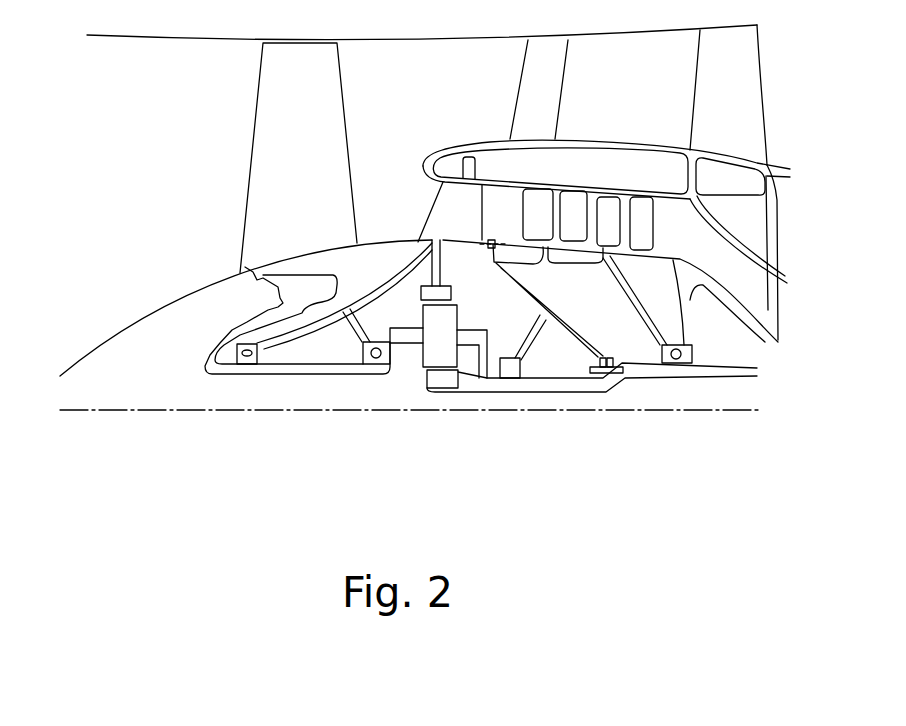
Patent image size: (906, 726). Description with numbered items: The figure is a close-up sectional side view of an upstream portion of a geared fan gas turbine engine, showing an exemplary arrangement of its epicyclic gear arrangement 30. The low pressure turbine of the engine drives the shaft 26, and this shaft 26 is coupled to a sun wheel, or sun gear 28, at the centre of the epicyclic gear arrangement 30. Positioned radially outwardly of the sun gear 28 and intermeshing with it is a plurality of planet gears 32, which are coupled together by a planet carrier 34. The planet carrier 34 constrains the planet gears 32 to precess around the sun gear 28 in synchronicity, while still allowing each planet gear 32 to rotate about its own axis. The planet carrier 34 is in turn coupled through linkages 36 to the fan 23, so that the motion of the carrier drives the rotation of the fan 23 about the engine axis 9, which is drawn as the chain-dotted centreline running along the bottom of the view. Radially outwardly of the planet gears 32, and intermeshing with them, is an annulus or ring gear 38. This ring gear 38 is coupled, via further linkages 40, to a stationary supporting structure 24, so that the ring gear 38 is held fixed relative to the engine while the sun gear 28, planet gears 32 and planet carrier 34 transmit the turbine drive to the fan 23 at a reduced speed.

The engine axis 9 is at (230, 410).
The fan 23 is at (267, 158).
The stationary supporting structure 24 is at (447, 205).
The shaft 26 is at (573, 393).
The sun gear 28 is at (446, 385).
The epicyclic gear arrangement 30 is at (428, 353).
The planet gears 32 is at (435, 376).
The planet carrier 34 is at (482, 367).
The linkages 36 is at (402, 352).
The ring gear 38 is at (423, 295).
The linkages 40 is at (443, 275).